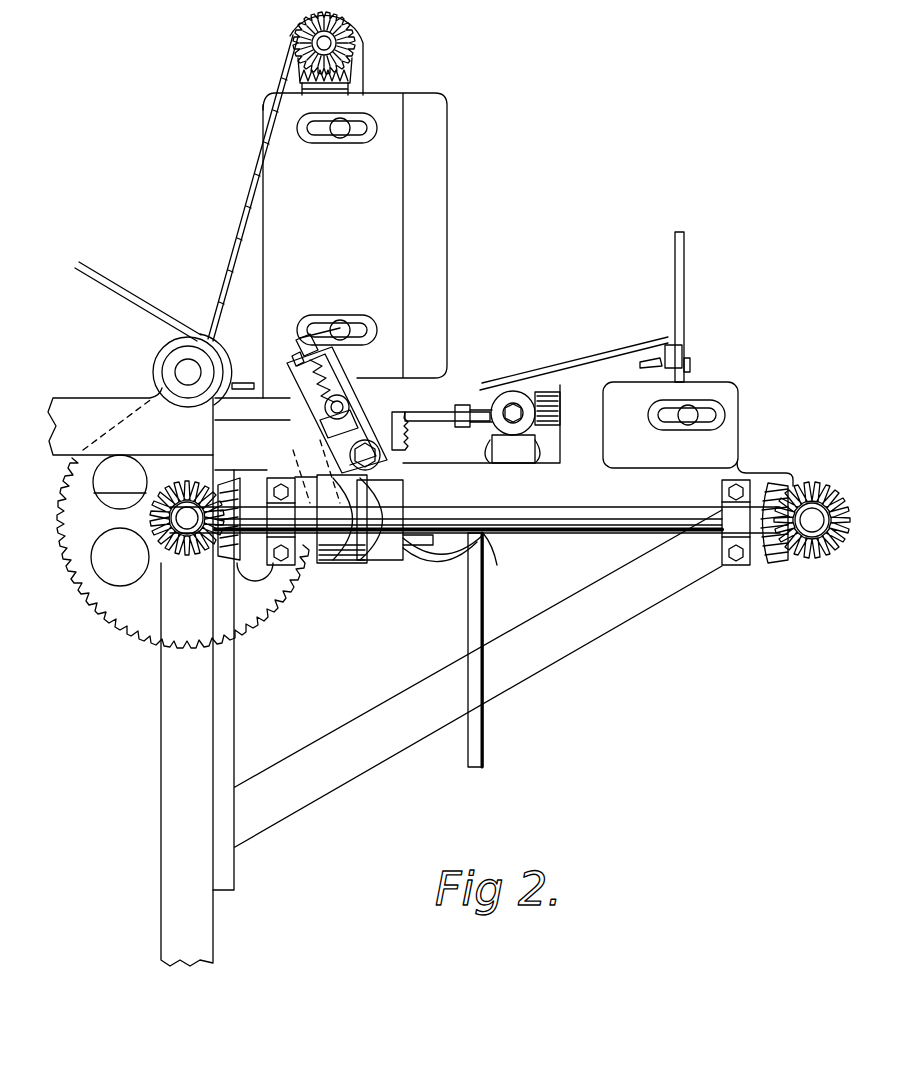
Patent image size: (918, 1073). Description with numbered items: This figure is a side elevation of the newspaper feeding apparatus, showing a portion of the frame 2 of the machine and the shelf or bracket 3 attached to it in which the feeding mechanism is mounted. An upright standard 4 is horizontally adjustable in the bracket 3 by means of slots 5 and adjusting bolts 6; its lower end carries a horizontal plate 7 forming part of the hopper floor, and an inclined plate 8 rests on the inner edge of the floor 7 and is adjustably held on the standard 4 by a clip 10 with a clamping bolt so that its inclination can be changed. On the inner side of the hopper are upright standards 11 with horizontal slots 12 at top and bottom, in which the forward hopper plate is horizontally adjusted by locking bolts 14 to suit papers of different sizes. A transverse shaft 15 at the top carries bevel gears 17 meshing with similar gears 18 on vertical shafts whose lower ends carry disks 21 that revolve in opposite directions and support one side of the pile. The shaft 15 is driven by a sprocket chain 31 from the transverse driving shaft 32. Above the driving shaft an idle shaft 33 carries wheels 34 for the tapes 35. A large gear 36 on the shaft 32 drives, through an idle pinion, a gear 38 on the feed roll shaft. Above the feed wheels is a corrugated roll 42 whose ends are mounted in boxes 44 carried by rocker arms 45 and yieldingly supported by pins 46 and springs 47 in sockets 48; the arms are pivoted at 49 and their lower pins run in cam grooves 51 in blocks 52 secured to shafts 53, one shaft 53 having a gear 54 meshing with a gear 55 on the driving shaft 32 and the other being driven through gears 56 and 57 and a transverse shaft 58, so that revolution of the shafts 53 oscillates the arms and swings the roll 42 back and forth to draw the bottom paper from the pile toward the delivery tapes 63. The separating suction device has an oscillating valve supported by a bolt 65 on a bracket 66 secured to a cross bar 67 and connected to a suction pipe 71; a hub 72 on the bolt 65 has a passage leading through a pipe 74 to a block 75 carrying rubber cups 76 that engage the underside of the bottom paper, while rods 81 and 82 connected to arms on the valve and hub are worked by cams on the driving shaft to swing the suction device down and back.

The frame 2 is at (167, 777).
The shelf or bracket 3 is at (683, 570).
The upright standard 4 is at (686, 290).
The slots 5 is at (716, 417).
The adjusting bolts 6 is at (690, 405).
The horizontal plate 7 is at (577, 390).
The plate 8 is at (603, 362).
The clip 10 is at (664, 358).
The upright standards 11 is at (398, 140).
The horizontal slots 12 is at (368, 127).
The locking bolts 14 is at (345, 125).
The transverse shaft 15 is at (312, 43).
The bevel gears 17 is at (305, 18).
The bevel gears 18 is at (302, 72).
The disks 21 is at (247, 382).
The sprocket chain 31 is at (244, 212).
The driving shaft 32 is at (183, 518).
The idle shaft 33 is at (186, 372).
The wheels 34 is at (160, 348).
The tapes 35 is at (83, 268).
The large gear 36 is at (120, 608).
The gear 38 is at (395, 455).
The corrugated roll 42 is at (333, 410).
The boxes 44 is at (385, 385).
The rocker arms 45 is at (345, 437).
The pins 46 is at (372, 340).
The springs 47 is at (345, 363).
The sockets or recesses 48 is at (303, 388).
The pivot 49 is at (380, 460).
The cam grooves 51 is at (367, 553).
The blocks 52 is at (337, 557).
The shafts 53 is at (555, 527).
The gear 54 is at (220, 573).
The gear 55 is at (198, 560).
The gear 56 is at (767, 563).
The gear 57 is at (825, 563).
The transverse shaft 58 is at (812, 515).
The tapes 63 is at (98, 493).
The bolt 65 is at (513, 420).
The bracket 66 is at (540, 425).
The cross bar 67 is at (557, 428).
The suction pipe 71 is at (476, 592).
The hub 72 is at (540, 407).
The pipe 74 is at (480, 403).
The block 75 is at (420, 407).
The cups 76 is at (400, 410).
The rod 81 is at (445, 540).
The rod 82 is at (493, 536).